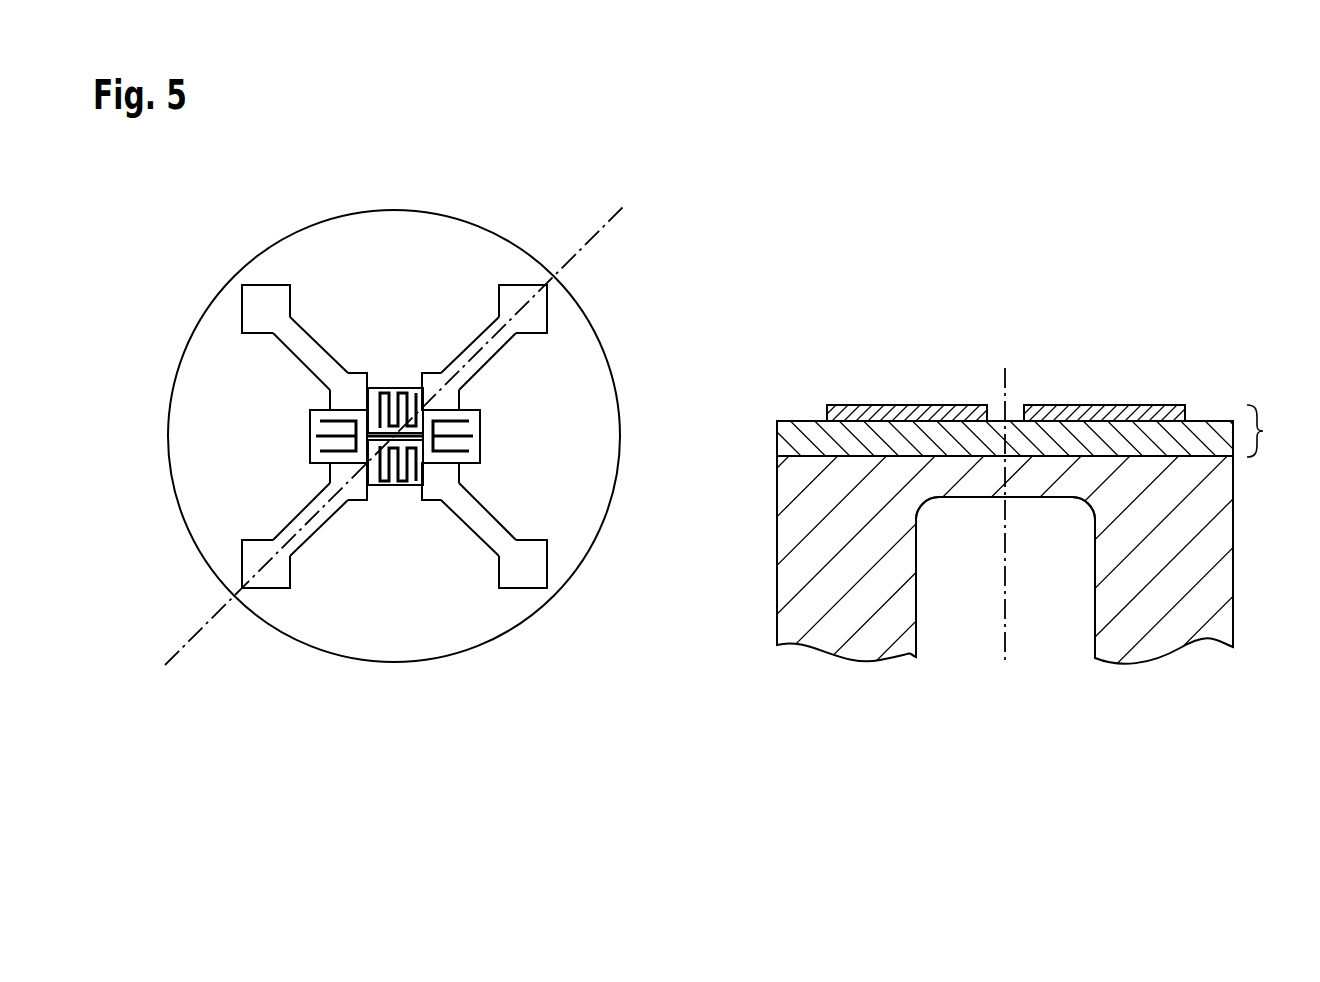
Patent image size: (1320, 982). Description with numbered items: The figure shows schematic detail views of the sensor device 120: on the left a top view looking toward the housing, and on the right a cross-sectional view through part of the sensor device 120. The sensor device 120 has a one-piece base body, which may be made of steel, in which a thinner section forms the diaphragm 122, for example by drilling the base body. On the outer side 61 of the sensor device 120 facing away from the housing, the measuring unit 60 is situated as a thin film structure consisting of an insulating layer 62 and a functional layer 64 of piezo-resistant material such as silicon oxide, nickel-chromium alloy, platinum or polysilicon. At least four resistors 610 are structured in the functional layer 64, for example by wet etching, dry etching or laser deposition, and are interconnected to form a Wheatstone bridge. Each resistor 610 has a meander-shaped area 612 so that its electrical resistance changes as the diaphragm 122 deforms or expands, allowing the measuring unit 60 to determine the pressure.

The measuring unit 60 is at (1272, 431).
The outer side 61 is at (367, 236).
The insulating layer 62 is at (803, 442).
The functional layer 64 is at (900, 414).
The sensor device 120 is at (828, 533).
The diaphragm 122 is at (993, 482).
The resistors 610 is at (270, 298).
The meander-shaped area 612 is at (396, 390).